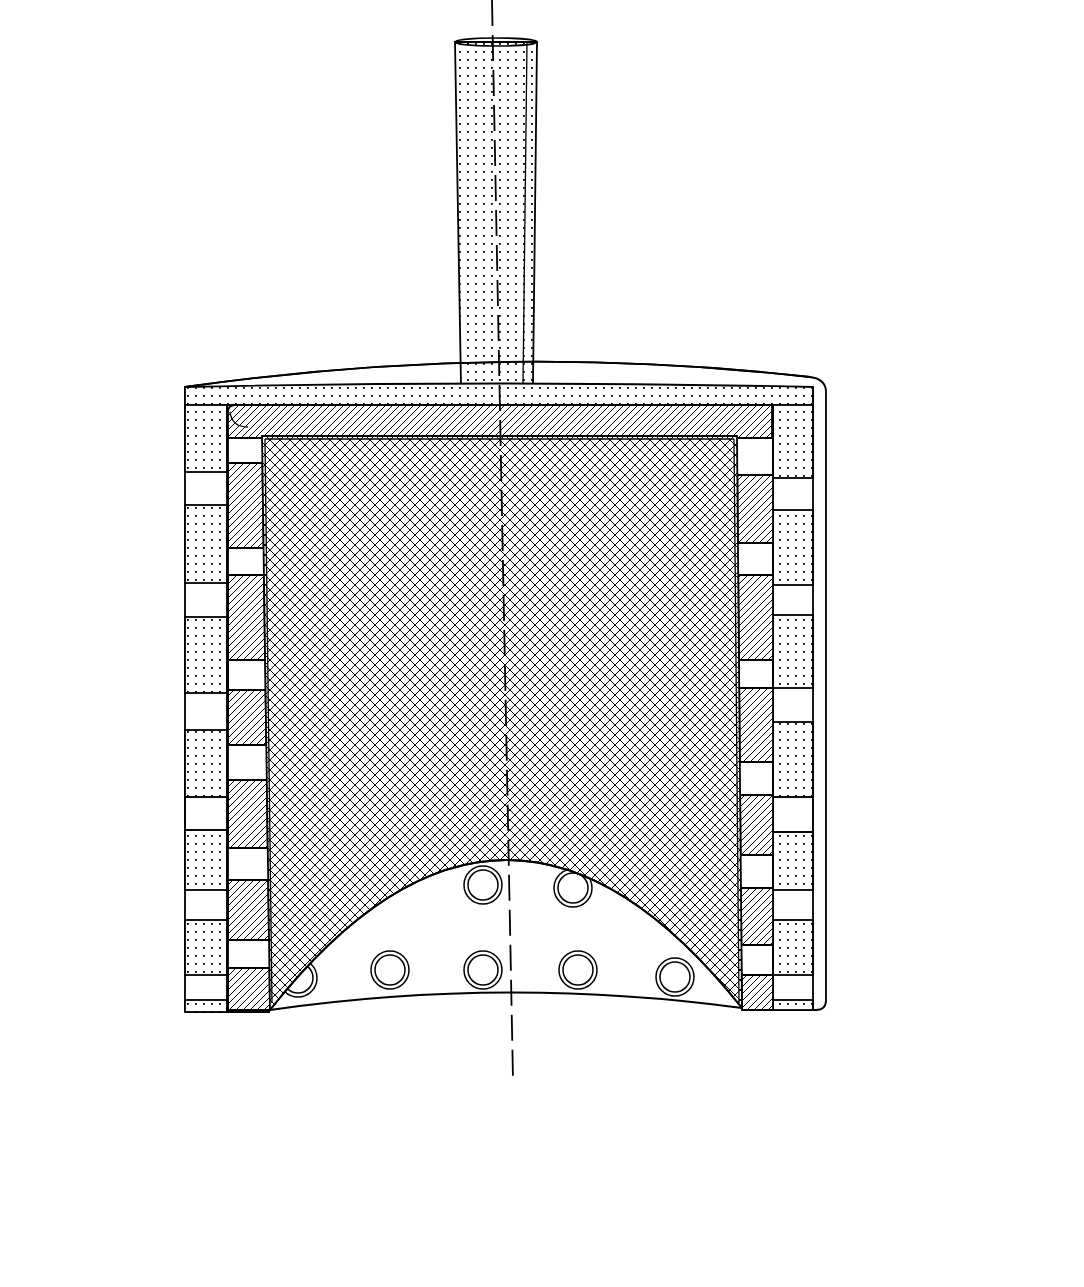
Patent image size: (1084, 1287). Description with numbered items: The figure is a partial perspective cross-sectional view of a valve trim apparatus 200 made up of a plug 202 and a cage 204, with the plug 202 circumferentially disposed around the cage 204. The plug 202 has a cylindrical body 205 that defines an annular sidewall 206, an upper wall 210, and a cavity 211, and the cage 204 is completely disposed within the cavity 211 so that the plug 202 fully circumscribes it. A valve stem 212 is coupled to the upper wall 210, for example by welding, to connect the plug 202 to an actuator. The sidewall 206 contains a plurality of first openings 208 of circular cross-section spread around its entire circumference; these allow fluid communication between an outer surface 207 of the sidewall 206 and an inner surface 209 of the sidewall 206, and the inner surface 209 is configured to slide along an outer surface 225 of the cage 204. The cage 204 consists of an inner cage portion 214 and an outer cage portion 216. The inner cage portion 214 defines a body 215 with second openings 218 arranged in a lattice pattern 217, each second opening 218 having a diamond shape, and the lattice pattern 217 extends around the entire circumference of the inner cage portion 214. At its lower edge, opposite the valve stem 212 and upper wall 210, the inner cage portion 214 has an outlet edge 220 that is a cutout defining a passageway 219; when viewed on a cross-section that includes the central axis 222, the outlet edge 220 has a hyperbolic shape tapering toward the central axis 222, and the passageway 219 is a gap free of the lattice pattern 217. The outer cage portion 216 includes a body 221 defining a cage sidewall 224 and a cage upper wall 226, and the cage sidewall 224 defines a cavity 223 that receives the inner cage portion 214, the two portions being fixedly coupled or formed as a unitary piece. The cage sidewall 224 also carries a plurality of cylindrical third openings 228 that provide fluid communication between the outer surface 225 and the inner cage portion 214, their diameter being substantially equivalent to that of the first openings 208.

The valve trim apparatus 200 is at (141, 58).
The plug 202 is at (605, 366).
The cage 204 is at (395, 1070).
The body 205 is at (183, 387).
The sidewall 206 is at (190, 447).
The outer surface 207 is at (187, 543).
The first openings 208 is at (203, 805).
The inner surface 209 is at (238, 420).
The upper wall 210 is at (326, 367).
The cavity 211 is at (412, 405).
The valve stem 212 is at (527, 122).
The inner cage portion 214 is at (703, 477).
The body 215 is at (747, 953).
The outer cage portion 216 is at (248, 1013).
The lattice pattern 217 is at (683, 478).
The second openings 218 is at (702, 445).
The passageway 219 is at (614, 988).
The outlet edge 220 is at (423, 878).
The body 221 is at (257, 917).
The central axis 222 is at (497, 253).
The cavity 223 is at (325, 438).
The cage sidewall 224 is at (233, 816).
The outer surface 225 is at (245, 720).
The cage upper wall 226 is at (640, 403).
The third openings 228 is at (247, 675).